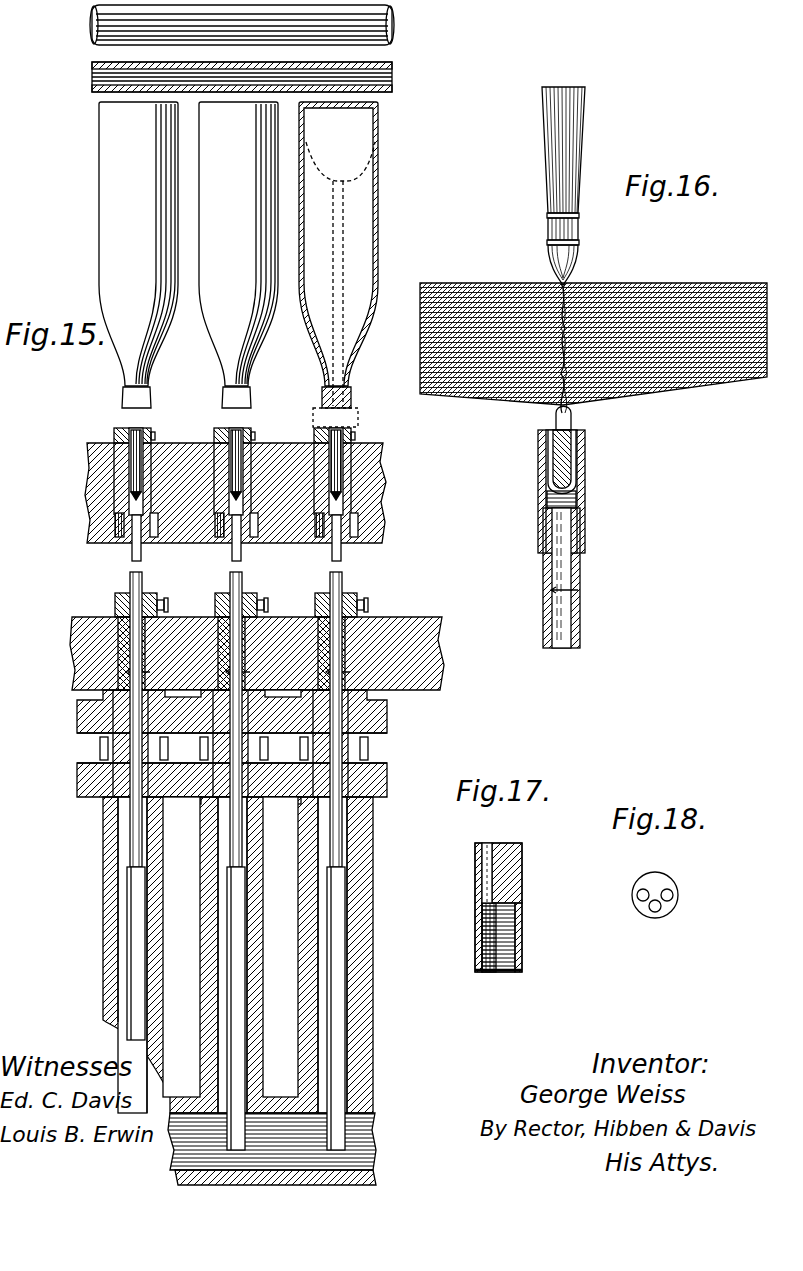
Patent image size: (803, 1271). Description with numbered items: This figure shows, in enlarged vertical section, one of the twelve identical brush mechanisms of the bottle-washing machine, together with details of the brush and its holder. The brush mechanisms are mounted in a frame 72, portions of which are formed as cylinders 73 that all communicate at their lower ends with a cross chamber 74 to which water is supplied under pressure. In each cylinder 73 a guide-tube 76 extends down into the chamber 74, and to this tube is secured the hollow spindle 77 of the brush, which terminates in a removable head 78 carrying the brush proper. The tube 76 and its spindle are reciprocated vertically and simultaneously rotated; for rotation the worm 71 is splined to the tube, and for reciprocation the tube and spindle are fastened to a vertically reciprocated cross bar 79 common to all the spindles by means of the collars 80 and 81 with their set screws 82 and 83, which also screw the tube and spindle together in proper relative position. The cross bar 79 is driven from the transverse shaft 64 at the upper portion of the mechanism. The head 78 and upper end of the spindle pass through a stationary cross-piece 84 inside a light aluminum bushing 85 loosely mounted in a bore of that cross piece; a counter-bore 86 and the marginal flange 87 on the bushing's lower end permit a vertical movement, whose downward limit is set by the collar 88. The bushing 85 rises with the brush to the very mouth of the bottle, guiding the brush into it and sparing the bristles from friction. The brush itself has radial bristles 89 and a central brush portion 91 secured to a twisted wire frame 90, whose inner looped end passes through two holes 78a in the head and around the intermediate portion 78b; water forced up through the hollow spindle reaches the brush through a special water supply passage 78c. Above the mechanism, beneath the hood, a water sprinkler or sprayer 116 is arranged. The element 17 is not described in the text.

In FIG. 15, the driving shaft 64 is at (90, 30).
In FIG. 15, the water sprinkler or sprayer 116 is at (92, 76).
In FIG. 15, the collar 88 is at (114, 432).
In FIG. 15, the bushing 85 is at (129, 459).
In FIG. 15, the cross-piece 84 is at (92, 496).
In FIG. 15, the counter-bore 86 is at (115, 522).
In FIG. 15, the marginal flange 87 is at (118, 546).
In FIG. 15, the hollow spindle 77 is at (132, 556).
In FIG. 16, the hollow spindle 77 is at (582, 632).
In FIG. 15, the removable head 78 is at (145, 546).
In FIG. 16, the removable head 78 is at (586, 494).
In FIG. 17, the removable head 78 is at (522, 866).
In FIG. 18, the removable head 78 is at (640, 908).
In FIG. 15, the set screw 83 is at (163, 600).
In FIG. 15, the collar 81 is at (114, 604).
In FIG. 15, the cross bar 79 is at (74, 646).
In FIG. 15, the collar 80 is at (118, 672).
In FIG. 15, the set screw 82 is at (150, 672).
In FIG. 15, the frame 72 is at (80, 717).
In FIG. 15, the worm 71 is at (100, 748).
In FIG. 15, the guide-tube 76 is at (127, 886).
In FIG. 15, the cylinder 73 is at (105, 936).
In FIG. 15, the cross chamber 74 is at (272, 1149).
In FIG. 16, the central brush portion 91 is at (546, 170).
In FIG. 16, the radial bristles 89 is at (475, 278).
In FIG. 16, the twisted wire frame 90 is at (572, 420).
In FIG. 16, the holes 78a is at (540, 445).
In FIG. 18, the holes 78a is at (666, 889).
In FIG. 16, the intermediate portion 78b is at (560, 463).
In FIG. 18, the intermediate portion 78b is at (672, 897).
In FIG. 17, the water supply hole or passage 78c is at (482, 874).
In FIG. 18, the water supply hole or passage 78c is at (658, 912).
In FIG. 16, the needle bar 17 is at (564, 602).